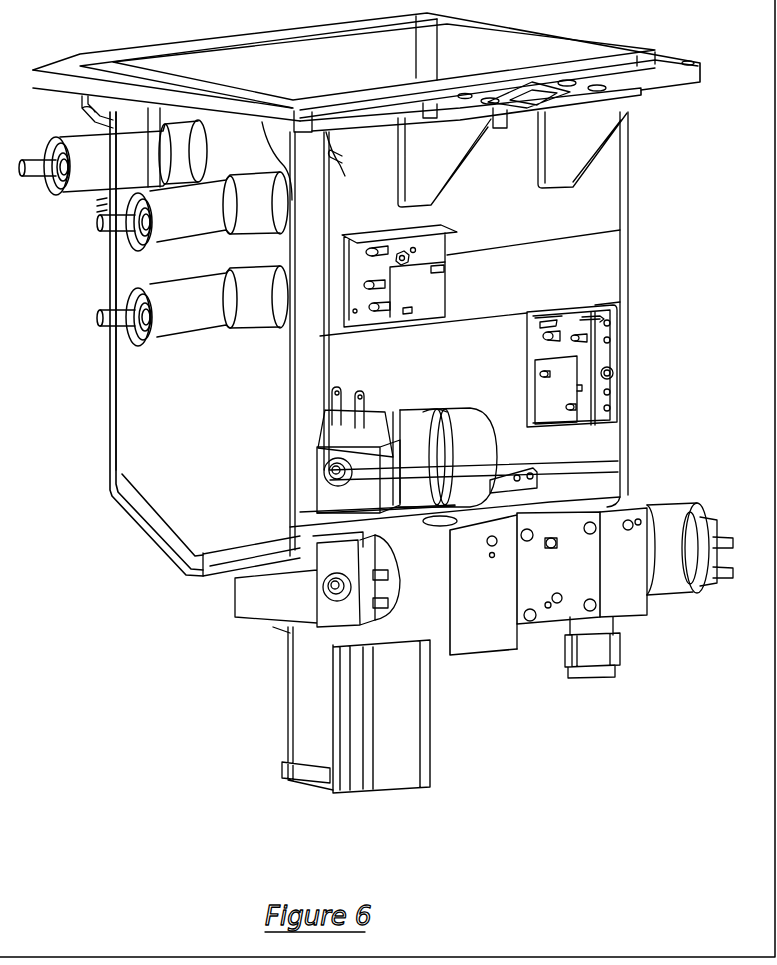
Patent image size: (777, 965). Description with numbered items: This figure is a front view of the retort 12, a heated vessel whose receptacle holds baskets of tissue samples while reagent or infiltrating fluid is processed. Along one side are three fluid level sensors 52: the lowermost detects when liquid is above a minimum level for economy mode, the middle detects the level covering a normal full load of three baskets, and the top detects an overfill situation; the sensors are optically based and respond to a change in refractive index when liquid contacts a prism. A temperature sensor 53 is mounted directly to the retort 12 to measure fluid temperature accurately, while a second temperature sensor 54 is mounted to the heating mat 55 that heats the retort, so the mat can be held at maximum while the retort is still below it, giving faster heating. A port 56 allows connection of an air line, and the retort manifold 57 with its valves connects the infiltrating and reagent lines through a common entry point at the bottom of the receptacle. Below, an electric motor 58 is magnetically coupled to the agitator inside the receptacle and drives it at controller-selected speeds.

The retort 12 is at (635, 168).
The sensors 52 is at (50, 192).
The temperature sensor 53 is at (440, 241).
The temperature sensor 54 is at (605, 352).
The heating mat 55 is at (577, 452).
The port 56 is at (88, 122).
The retort manifold 57 is at (472, 643).
The electric motor 58 is at (400, 765).